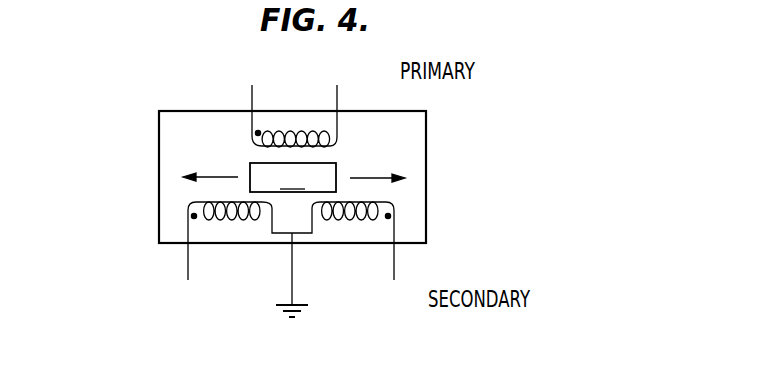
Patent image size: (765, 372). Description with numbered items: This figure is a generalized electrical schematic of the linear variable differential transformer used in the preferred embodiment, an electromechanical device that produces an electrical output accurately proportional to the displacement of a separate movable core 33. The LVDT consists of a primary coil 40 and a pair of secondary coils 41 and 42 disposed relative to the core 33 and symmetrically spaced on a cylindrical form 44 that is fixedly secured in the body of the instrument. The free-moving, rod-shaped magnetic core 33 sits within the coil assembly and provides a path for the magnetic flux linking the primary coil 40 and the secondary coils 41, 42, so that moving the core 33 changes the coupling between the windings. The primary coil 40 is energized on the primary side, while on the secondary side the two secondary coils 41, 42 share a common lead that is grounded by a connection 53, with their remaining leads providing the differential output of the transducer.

The movable core 33 is at (293, 177).
The primary coil 40 is at (338, 142).
The secondary coil 41 is at (191, 212).
The secondary coil 42 is at (396, 211).
The cylindrical form 44 is at (426, 147).
The connection 53 is at (292, 268).